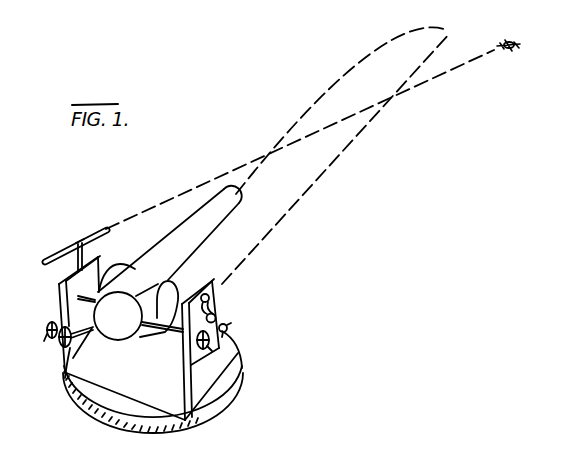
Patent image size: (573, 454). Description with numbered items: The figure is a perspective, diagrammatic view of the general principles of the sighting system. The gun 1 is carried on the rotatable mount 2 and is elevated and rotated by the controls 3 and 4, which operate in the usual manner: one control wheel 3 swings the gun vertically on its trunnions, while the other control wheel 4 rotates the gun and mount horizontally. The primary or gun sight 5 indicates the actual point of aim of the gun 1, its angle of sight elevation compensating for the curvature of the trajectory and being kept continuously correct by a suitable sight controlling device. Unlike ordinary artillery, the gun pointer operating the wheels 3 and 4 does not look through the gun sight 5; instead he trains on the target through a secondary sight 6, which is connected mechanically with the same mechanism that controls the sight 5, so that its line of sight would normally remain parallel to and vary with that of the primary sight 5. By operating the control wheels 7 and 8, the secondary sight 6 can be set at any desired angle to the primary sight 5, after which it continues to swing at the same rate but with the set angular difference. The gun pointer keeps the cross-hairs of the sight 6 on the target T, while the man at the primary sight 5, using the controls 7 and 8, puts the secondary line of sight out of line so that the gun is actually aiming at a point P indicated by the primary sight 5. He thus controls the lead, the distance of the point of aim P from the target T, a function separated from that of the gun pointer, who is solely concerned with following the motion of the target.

The gun 1 is at (203, 233).
The rotatable mount 2 is at (170, 397).
The control wheel 3 is at (62, 348).
The control wheel 4 is at (48, 333).
The primary or gun sight 5 is at (218, 306).
The secondary sight 6 is at (48, 265).
The control wheel 7 is at (230, 334).
The control wheel 8 is at (210, 346).
The point of aim P is at (448, 32).
The target T is at (508, 49).